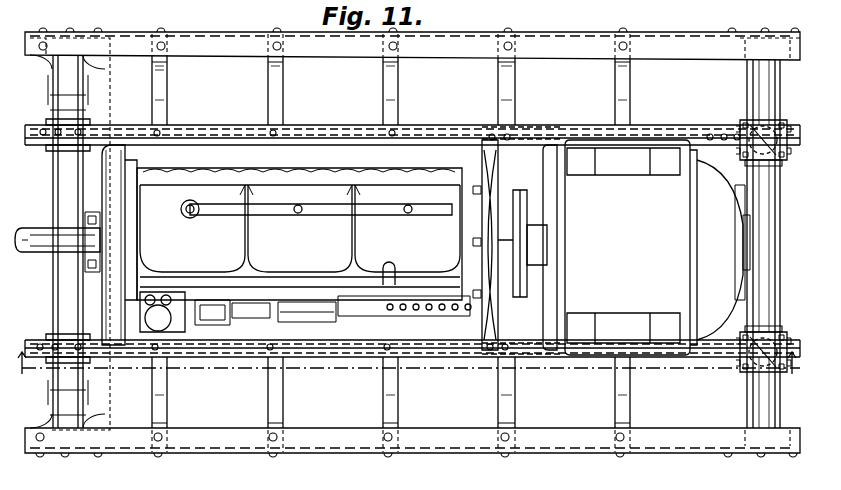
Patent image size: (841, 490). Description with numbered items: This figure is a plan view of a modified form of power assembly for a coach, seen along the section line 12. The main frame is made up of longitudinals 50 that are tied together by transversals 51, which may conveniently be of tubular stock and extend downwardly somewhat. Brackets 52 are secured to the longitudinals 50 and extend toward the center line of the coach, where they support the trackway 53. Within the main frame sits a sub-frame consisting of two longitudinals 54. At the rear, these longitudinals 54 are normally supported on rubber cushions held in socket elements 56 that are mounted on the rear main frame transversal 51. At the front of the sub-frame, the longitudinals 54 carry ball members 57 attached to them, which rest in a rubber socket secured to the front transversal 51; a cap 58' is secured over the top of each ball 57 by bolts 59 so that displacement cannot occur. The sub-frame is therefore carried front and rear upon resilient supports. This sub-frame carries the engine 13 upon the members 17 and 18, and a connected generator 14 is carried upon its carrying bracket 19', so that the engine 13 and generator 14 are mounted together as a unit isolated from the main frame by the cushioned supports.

The section line 12 is at (408, 375).
The engine 13 is at (286, 245).
The generator 14 is at (657, 247).
The member 17 is at (95, 185).
The member 18 is at (486, 192).
The carrying bracket 19' is at (623, 245).
The longitudinal 50 is at (665, 44).
The transversal 51 is at (60, 296).
The bracket 52 is at (500, 82).
The trackway 53 is at (537, 133).
The longitudinal 54 is at (343, 139).
The socket element 56 is at (57, 145).
The ball member 57 is at (756, 128).
The cap 58' is at (741, 245).
The bolt 59 is at (766, 160).